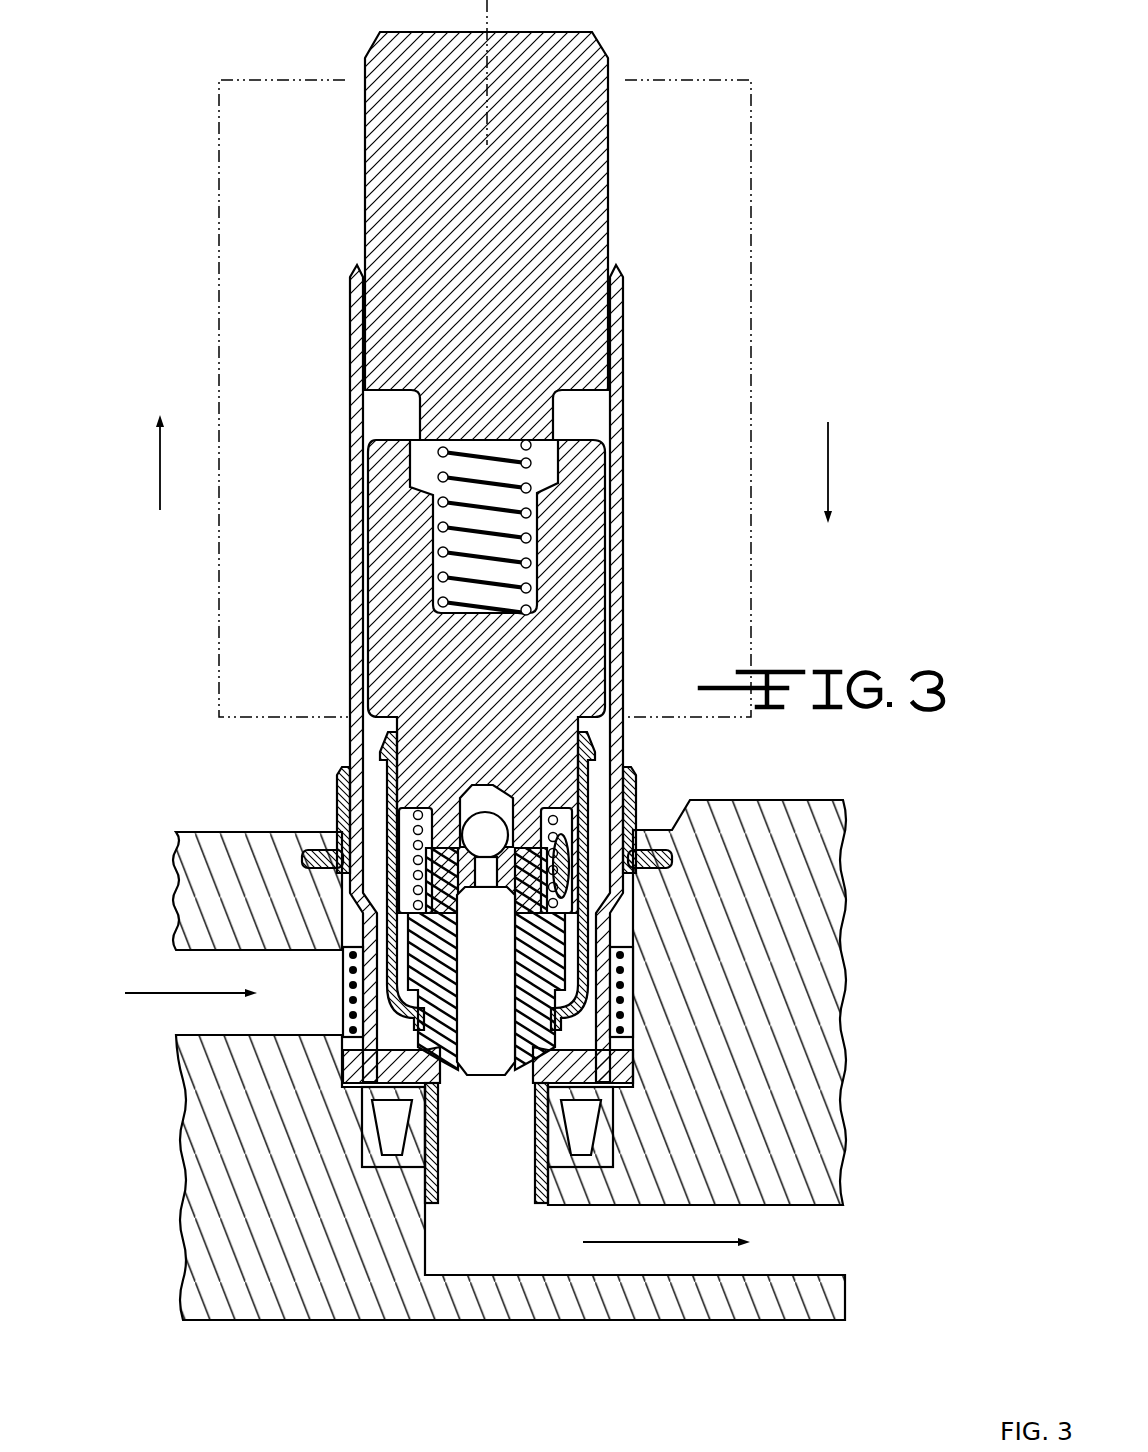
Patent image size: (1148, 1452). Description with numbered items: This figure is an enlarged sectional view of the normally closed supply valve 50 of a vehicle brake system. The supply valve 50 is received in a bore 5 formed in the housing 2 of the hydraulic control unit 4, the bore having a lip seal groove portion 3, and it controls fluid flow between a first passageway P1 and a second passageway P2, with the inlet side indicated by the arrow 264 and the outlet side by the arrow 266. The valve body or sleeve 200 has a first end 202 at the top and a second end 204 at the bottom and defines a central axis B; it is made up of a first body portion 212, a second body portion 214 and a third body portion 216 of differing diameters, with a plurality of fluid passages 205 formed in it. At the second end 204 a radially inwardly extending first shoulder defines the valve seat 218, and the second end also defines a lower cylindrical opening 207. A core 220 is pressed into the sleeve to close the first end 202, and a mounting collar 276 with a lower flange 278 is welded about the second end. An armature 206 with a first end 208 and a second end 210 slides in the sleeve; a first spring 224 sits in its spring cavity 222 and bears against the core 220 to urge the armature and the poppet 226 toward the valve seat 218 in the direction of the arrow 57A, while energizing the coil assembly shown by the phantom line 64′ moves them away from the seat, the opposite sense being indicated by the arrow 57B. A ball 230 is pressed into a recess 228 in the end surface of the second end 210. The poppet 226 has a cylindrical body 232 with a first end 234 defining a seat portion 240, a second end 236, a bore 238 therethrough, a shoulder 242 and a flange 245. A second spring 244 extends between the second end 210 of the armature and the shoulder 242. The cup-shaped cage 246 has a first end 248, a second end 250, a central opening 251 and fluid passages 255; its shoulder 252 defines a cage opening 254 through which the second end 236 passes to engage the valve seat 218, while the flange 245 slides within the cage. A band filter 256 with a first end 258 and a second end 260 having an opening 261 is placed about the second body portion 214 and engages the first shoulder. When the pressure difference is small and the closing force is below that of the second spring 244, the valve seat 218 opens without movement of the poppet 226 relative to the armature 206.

The housing 2 is at (183, 1312).
The lip seal groove portion 3 is at (405, 1080).
The hydraulic control unit 4 is at (148, 866).
The bore 5 is at (337, 910).
The supply valve 50 is at (186, 128).
The arrow 57A is at (830, 480).
The opening direction 57B is at (119, 462).
The phantom line 64′ is at (725, 187).
The sleeve 200 is at (638, 343).
The first end 202 is at (628, 282).
The second end 204 is at (560, 1190).
The fluid passages 205 is at (590, 1052).
The armature 206 is at (612, 476).
The lower cylindrical opening 207 is at (527, 1180).
The first end 208 is at (583, 430).
The second end 210 is at (388, 745).
The first body portion 212 is at (350, 352).
The second body portion 214 is at (370, 920).
The third body portion 216 is at (425, 1178).
The valve seat 218 is at (457, 1040).
The core 220 is at (590, 140).
The spring cavity 222 is at (513, 563).
The first spring 224 is at (553, 487).
The poppet 226 is at (646, 903).
The recess 228 is at (462, 812).
The ball 230 is at (470, 790).
The cylindrical body 232 is at (575, 948).
The first end 234 is at (402, 812).
The second end 236 is at (500, 1120).
The bore 238 is at (470, 1053).
The seat portion 240 is at (488, 817).
The shoulder 242 is at (645, 830).
The second spring 244 is at (414, 810).
The flange 245 is at (600, 960).
The cage 246 is at (563, 840).
The first end 248 is at (590, 765).
The second end 250 is at (392, 987).
The central opening 251 is at (510, 795).
The shoulder 252 is at (580, 1062).
The cage opening 254 is at (395, 1048).
The fluid passages 255 is at (598, 768).
The band filter 256 is at (637, 900).
The first end 258 is at (612, 885).
The second end 260 is at (585, 1010).
The opening 261 is at (547, 1080).
The arrow 264 is at (173, 993).
The arrow 266 is at (690, 1246).
The mounting collar 276 is at (330, 790).
The flange 278 is at (300, 862).
The central axis B is at (487, 3).
The first passageway P1 is at (230, 955).
The second passageway P2 is at (813, 1207).